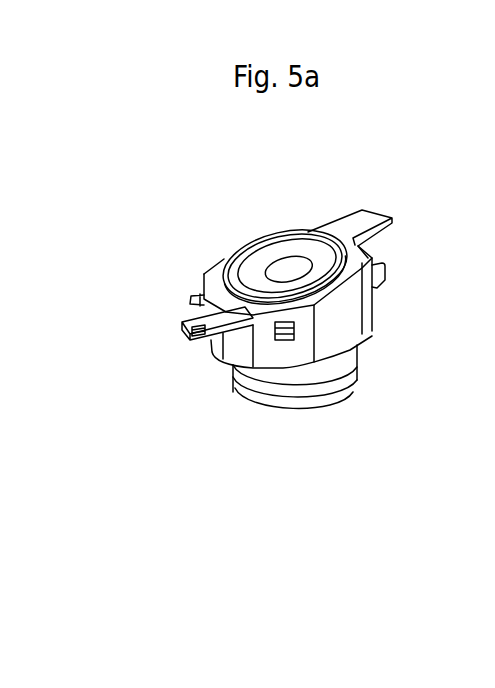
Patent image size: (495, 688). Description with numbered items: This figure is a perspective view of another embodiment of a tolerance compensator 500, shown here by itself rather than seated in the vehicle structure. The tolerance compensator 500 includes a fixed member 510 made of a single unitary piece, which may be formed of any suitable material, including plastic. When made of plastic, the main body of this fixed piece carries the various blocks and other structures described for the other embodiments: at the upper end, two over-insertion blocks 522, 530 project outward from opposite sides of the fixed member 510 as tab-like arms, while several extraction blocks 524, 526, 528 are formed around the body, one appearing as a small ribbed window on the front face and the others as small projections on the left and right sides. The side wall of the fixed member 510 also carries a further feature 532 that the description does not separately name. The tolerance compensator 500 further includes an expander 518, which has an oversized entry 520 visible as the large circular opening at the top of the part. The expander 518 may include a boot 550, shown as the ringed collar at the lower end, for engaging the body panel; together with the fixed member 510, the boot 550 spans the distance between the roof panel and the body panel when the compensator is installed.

The tolerance compensator 500 is at (347, 181).
The fixed member 510 is at (222, 266).
The expander 518 is at (358, 352).
The oversized entry 520 is at (284, 272).
The over-insertion block 522 is at (190, 333).
The extraction block 524 is at (294, 340).
The extraction block 526 is at (385, 278).
The extraction block 528 is at (190, 298).
The over-insertion block 530 is at (392, 219).
The side wall 532 is at (335, 313).
The boot 550 is at (288, 406).